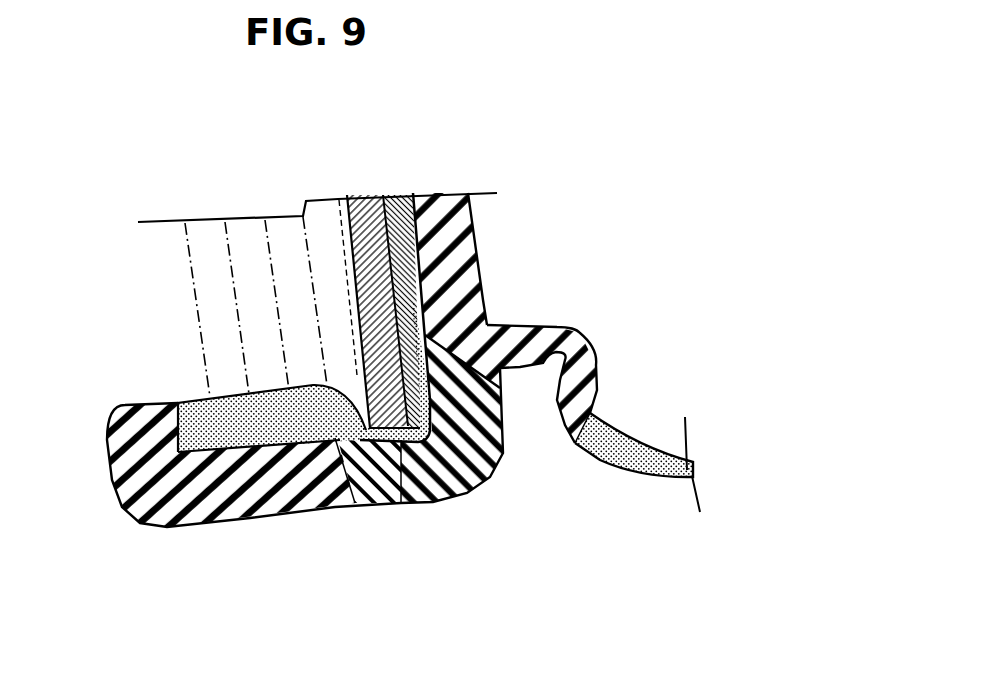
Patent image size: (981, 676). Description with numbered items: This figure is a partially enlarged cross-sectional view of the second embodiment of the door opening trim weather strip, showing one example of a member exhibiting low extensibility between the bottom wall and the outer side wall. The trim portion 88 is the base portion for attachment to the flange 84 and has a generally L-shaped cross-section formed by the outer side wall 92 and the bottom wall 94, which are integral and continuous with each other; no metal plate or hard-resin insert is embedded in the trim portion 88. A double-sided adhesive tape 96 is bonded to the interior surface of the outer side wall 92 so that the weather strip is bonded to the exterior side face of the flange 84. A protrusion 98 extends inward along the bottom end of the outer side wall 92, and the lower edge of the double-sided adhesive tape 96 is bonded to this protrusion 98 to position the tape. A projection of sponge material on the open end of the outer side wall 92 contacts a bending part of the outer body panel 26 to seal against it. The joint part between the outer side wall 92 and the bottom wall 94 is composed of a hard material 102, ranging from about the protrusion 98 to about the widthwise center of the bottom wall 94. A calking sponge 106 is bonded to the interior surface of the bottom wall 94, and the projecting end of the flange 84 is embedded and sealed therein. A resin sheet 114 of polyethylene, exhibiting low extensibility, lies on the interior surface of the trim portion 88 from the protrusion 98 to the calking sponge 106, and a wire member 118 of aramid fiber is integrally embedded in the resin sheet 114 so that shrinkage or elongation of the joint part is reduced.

The outer body panel 26 is at (376, 196).
The flange 84 is at (273, 277).
The trim portion 88 is at (205, 522).
The outer side wall 92 is at (480, 272).
The bottom wall 94 is at (272, 516).
The double-sided adhesive tape 96 is at (470, 226).
The protrusion 98 is at (485, 302).
The hard material 102 is at (504, 445).
The calking sponge 106 is at (183, 402).
The resin sheet 114 is at (395, 504).
The wire member 118 is at (483, 320).